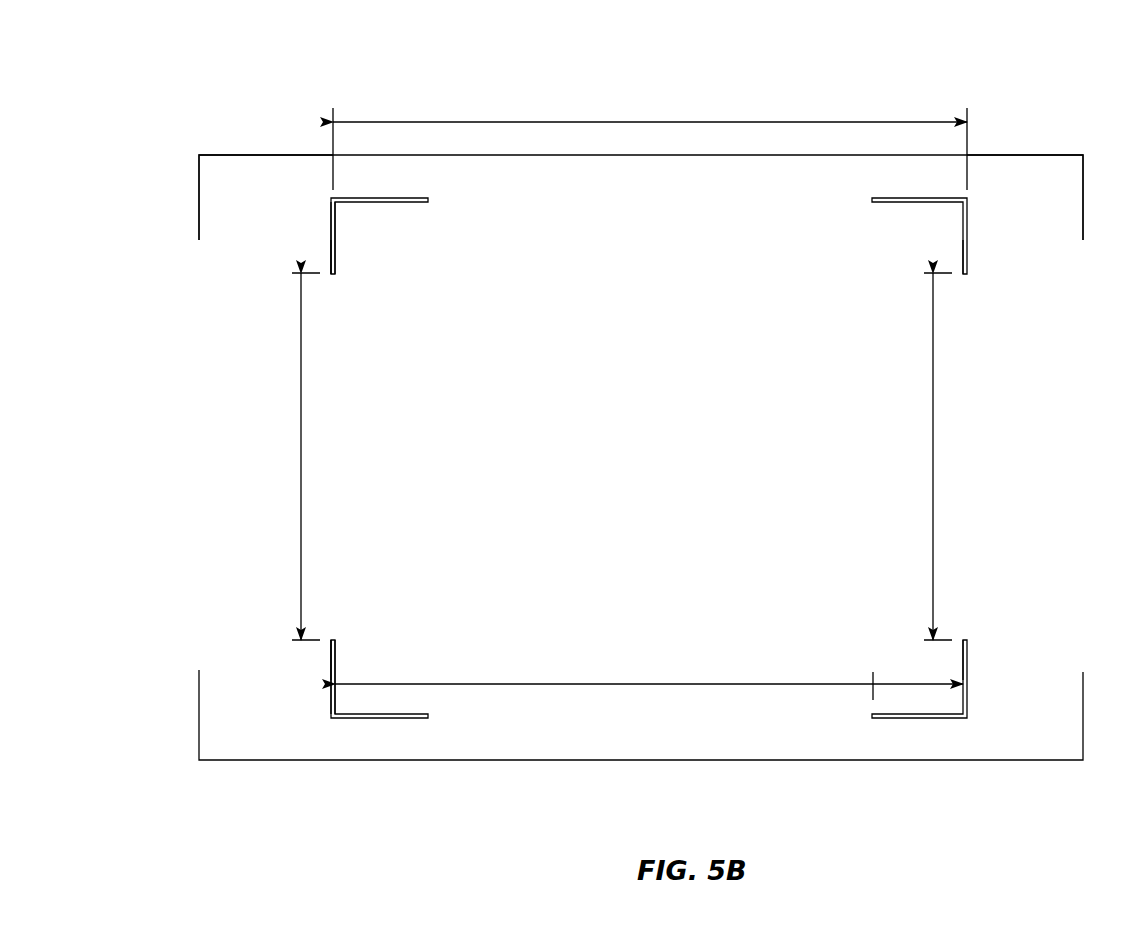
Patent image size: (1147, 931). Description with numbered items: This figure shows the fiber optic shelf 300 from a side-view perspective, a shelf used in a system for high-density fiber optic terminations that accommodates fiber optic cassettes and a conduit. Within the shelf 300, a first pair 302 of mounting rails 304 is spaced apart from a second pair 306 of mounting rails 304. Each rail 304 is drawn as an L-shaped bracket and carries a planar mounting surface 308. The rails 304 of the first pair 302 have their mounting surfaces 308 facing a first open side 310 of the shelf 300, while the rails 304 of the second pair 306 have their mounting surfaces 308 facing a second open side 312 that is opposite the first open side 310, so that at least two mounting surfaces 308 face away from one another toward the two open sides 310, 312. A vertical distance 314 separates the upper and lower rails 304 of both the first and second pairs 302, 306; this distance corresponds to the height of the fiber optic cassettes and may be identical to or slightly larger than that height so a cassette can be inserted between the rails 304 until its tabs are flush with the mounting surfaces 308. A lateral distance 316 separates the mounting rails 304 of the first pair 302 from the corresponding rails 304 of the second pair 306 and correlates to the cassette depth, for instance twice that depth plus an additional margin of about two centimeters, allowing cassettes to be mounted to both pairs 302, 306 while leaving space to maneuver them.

The fiber optic shelf 300 is at (953, 82).
The first pair of mounting rails 302 is at (967, 232).
The mounting rail 304 is at (331, 199).
The second pair of mounting rails 306 is at (331, 232).
The planar mounting surface 308 is at (331, 264).
The first open side 310 is at (1050, 338).
The second open side 312 is at (215, 296).
The vertical distance 314 is at (633, 456).
The lateral distance 316 is at (650, 399).